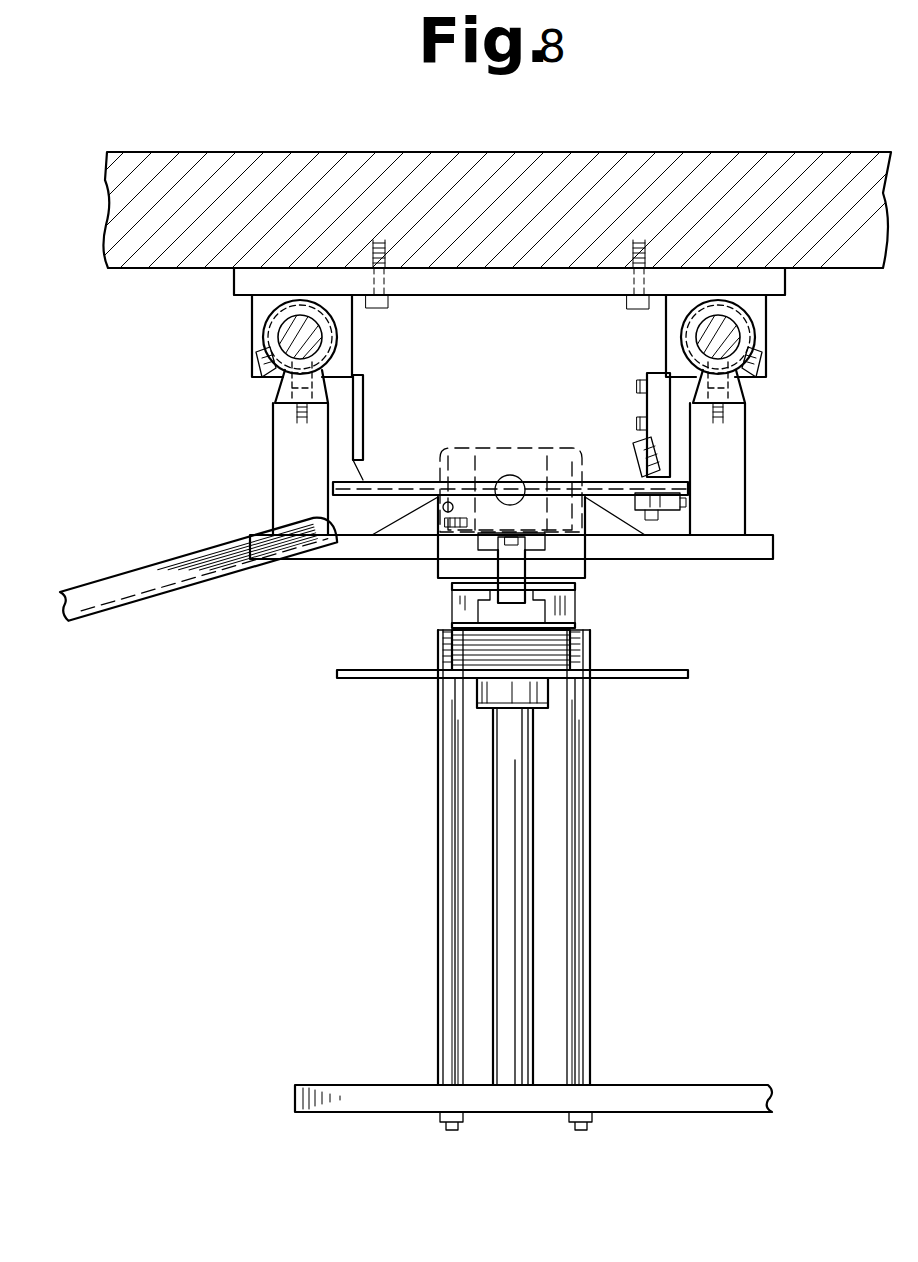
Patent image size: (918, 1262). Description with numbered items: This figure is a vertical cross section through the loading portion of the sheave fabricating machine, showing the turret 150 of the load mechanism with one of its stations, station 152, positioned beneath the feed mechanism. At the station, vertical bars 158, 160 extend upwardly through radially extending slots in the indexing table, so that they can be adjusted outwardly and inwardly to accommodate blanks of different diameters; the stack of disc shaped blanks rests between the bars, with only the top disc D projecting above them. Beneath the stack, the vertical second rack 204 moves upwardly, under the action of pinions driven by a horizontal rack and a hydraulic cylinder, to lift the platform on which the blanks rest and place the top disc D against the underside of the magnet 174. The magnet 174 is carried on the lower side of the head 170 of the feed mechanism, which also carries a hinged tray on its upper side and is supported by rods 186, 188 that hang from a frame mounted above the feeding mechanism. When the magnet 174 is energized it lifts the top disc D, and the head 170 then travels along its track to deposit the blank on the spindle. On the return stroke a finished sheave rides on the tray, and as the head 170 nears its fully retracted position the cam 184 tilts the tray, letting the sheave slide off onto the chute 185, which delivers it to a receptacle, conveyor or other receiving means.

The turret 150 is at (660, 1093).
The station 152 is at (437, 1070).
The vertical bar 158 is at (447, 911).
The vertical bar 160 is at (580, 912).
The head 170 is at (413, 482).
The magnet 174 is at (572, 597).
The cam 184 is at (663, 510).
The chute 185 is at (160, 582).
The rod 186 is at (297, 353).
The rod 188 is at (748, 348).
The second rack 204 is at (527, 821).
The top disc D is at (570, 631).